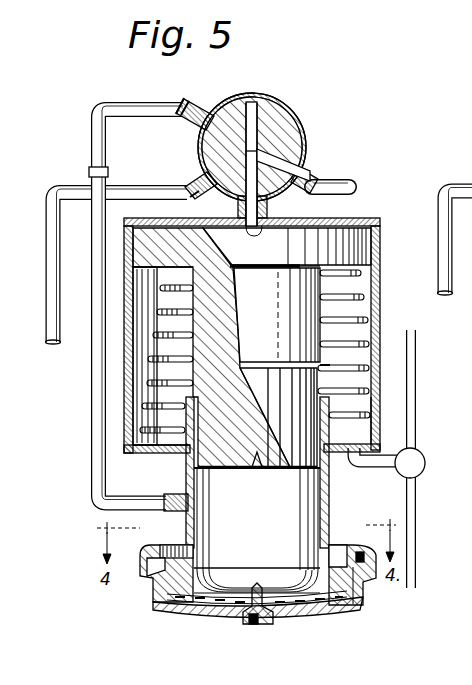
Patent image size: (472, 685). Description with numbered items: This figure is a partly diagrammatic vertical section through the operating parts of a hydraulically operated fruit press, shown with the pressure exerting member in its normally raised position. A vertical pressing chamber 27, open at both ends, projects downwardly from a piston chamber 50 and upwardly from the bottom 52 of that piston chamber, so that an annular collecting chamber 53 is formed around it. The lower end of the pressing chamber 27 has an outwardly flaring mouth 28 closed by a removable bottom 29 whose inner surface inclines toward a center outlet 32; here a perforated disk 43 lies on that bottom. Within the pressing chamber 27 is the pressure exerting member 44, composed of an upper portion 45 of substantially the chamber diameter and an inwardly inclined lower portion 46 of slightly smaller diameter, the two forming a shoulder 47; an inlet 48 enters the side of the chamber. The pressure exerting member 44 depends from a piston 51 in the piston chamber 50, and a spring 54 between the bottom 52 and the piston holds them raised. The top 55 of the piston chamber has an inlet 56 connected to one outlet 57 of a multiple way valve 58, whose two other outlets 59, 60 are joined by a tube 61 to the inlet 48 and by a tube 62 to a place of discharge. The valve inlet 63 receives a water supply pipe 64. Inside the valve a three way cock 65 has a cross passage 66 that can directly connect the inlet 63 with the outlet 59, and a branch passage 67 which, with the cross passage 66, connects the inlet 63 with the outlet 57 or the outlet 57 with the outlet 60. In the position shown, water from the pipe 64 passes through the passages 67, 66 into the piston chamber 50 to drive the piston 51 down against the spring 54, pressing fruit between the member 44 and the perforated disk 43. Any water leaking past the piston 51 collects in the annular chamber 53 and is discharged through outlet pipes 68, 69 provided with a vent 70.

The pressing chamber 27 is at (306, 508).
The outwardly flaring mouth 28 is at (303, 612).
The removable bottom 29 is at (359, 610).
The center outlet 32 is at (256, 624).
The perforated disk 43 is at (208, 602).
The pressure exerting member 44 is at (274, 462).
The upper portion of pressure exerting member 45 is at (296, 313).
The lower portion of pressure exerting member 46 is at (280, 425).
The shoulder 47 is at (333, 372).
The inlet 48 is at (198, 508).
The piston chamber 50 is at (365, 280).
The piston 51 is at (359, 220).
The bottom of piston chamber 52 is at (152, 447).
The annular collecting chamber 53 is at (369, 427).
The spring 54 is at (354, 383).
The top of piston chamber 55 is at (329, 217).
The inlet 56 is at (270, 223).
The outlet of multiple way valve 57 is at (237, 208).
The multiple way valve 58 is at (286, 107).
The outlet of multiple way valve 59 is at (198, 110).
The outlet of multiple way valve 60 is at (192, 175).
The tube 61 is at (97, 423).
The tube 62 is at (62, 186).
The valve inlet 63 is at (343, 175).
The water supply pipe 64 is at (340, 197).
The three way cock 65 is at (283, 124).
The cross passage 66 is at (269, 93).
The branch passage 67 is at (268, 162).
The outlet pipe 68 is at (383, 468).
The outlet pipe 69 is at (418, 502).
The vent 70 is at (414, 377).